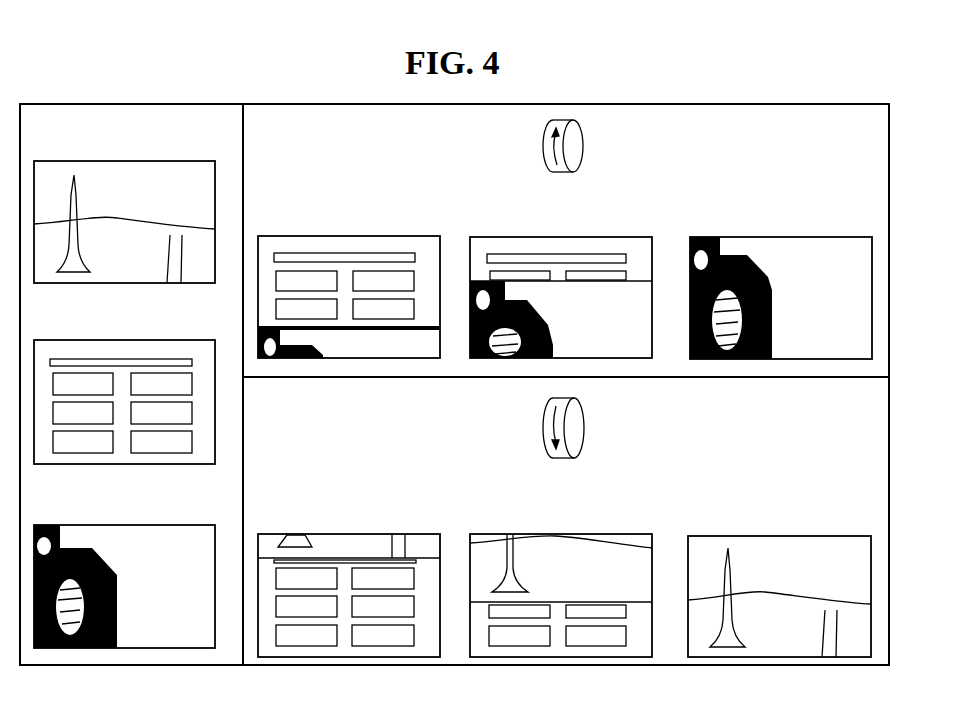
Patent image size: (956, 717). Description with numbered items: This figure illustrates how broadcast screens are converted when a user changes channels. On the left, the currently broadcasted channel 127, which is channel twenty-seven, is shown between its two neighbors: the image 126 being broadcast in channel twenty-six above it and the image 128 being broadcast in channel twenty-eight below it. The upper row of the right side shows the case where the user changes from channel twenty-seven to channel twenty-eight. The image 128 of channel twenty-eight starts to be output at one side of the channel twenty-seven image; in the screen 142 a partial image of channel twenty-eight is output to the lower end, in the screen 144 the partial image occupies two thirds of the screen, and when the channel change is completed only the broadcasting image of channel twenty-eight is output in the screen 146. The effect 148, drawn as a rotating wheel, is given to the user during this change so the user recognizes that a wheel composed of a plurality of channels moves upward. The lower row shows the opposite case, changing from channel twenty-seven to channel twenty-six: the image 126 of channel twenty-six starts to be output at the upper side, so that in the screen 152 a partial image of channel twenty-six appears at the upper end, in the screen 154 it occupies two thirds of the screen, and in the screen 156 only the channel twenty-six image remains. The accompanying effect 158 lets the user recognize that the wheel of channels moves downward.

The image of Ch. 26 126 is at (128, 160).
The currently broadcasted channel 127 is at (122, 337).
The image of Ch. 28 128 is at (118, 524).
The screen 142 is at (343, 229).
The screen 144 is at (549, 229).
The screen 146 is at (751, 229).
The effect 148 is at (588, 147).
The screen 152 is at (343, 521).
The screen 154 is at (549, 524).
The screen 156 is at (749, 525).
The effect 158 is at (589, 418).